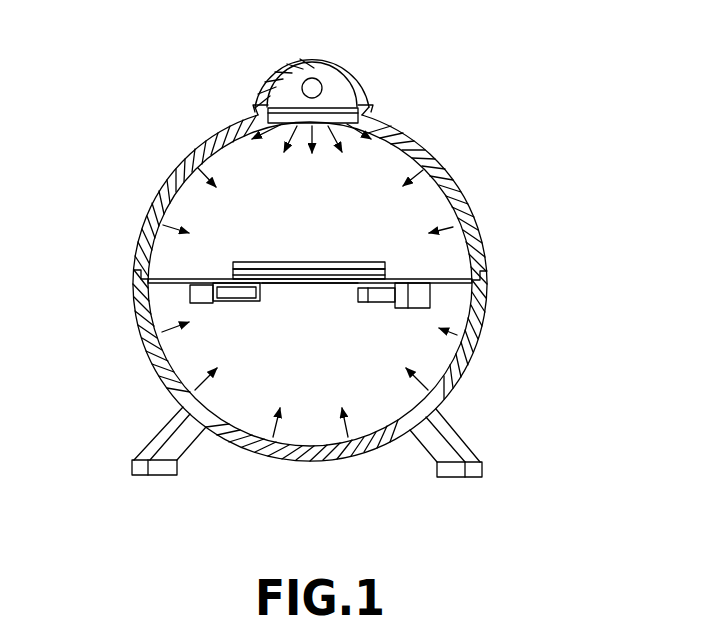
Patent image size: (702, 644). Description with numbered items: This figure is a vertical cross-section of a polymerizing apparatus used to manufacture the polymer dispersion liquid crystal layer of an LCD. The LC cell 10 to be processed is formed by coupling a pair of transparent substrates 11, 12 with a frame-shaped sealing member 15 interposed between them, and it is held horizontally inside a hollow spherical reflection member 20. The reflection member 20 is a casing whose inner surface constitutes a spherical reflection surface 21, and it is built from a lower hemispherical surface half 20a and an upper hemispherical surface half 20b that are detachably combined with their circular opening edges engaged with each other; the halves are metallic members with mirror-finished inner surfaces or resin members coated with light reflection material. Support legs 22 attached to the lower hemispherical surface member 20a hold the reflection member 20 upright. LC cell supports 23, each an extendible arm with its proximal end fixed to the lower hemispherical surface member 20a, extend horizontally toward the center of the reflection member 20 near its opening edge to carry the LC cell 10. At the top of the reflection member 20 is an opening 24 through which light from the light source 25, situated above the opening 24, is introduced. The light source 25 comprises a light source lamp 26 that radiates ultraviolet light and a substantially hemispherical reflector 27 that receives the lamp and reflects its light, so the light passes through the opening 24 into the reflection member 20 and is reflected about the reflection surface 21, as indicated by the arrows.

The LC cell 10 is at (362, 256).
The transparent substrate 11 is at (235, 262).
The transparent substrate 12 is at (293, 287).
The sealing member 15 is at (388, 258).
The reflection member 20 is at (461, 172).
The lower hemispherical surface half 20a is at (160, 377).
The upper hemispherical surface half 20b is at (203, 151).
The spherical reflection surface 21 is at (177, 189).
The support legs 22 is at (134, 459).
The LC cell supports 23 is at (237, 301).
The opening 24 is at (280, 113).
The light source 25 is at (372, 77).
The light source lamp 26 is at (294, 62).
The reflector 27 is at (336, 63).